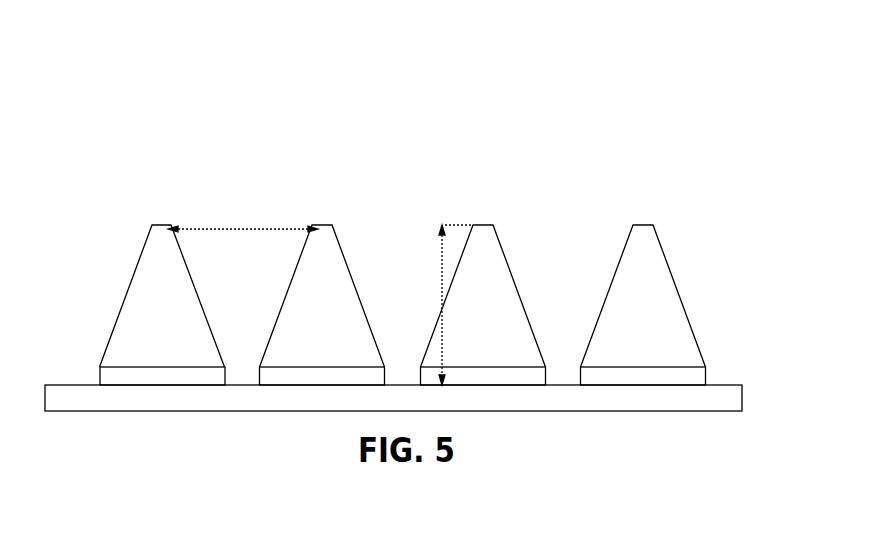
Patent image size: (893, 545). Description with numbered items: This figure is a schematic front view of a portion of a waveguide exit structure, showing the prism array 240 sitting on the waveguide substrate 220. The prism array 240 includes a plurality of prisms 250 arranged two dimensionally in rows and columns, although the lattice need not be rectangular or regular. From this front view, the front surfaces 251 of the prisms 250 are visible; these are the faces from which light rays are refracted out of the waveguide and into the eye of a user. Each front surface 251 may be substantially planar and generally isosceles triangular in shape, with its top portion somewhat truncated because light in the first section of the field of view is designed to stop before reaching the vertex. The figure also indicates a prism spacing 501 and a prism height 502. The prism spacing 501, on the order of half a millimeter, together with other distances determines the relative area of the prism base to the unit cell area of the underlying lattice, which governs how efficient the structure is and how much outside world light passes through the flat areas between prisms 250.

The substrate 220 is at (728, 392).
The prism array 240 is at (765, 145).
The prism 250 is at (631, 260).
The front surface 251 is at (648, 295).
The prism spacing 501 is at (243, 229).
The prism height 502 is at (442, 280).